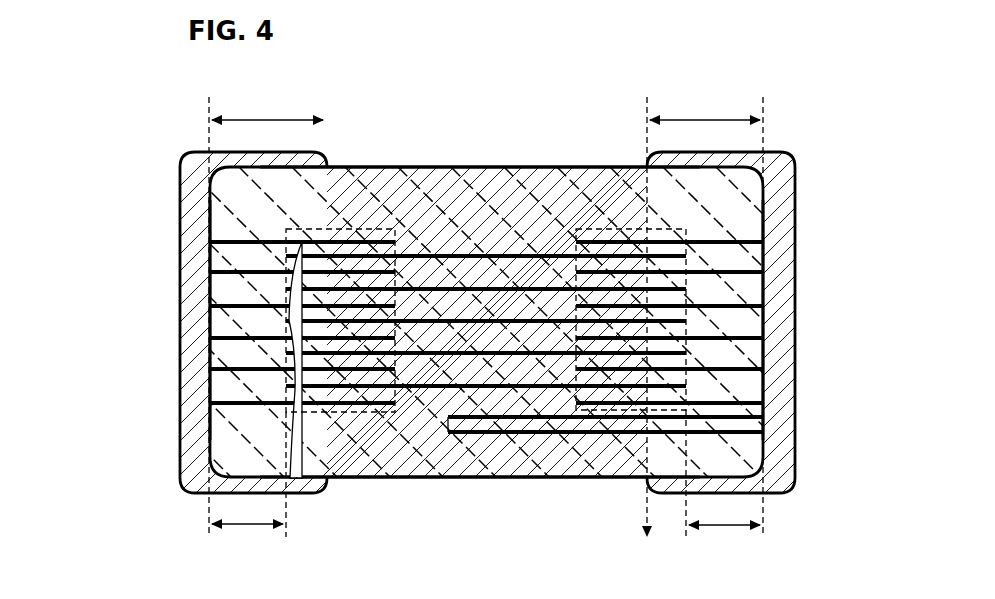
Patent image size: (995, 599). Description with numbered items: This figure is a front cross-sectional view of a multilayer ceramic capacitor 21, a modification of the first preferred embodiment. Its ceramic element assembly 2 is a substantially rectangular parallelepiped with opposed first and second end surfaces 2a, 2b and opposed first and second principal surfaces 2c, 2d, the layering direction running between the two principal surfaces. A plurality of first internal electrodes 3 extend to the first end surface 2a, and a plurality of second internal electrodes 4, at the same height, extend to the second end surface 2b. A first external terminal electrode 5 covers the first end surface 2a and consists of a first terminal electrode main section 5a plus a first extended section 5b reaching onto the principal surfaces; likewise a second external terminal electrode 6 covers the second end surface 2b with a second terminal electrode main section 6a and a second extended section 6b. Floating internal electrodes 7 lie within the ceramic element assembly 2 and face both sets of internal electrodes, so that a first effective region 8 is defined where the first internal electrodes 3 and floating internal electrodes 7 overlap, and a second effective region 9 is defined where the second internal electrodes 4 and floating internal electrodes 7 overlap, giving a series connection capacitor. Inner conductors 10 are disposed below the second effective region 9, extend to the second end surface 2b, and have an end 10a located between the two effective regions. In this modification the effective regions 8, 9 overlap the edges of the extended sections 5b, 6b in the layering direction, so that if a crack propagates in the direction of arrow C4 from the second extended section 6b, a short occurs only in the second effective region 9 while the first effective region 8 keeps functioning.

The multilayer ceramic capacitor 21 is at (170, 110).
The ceramic element assembly 2 is at (425, 164).
The first end surface 2a is at (752, 220).
The second end surface 2b is at (214, 219).
The first principal surface 2c is at (533, 166).
The second principal surface 2d is at (352, 478).
The first internal electrodes 3 is at (745, 268).
The second internal electrodes 4 is at (235, 367).
The first external terminal electrode 5 is at (650, 302).
The first terminal electrode main section 5a is at (795, 187).
The first extended section 5b is at (745, 152).
The second external terminal electrode 6 is at (328, 348).
The second terminal electrode main section 6a is at (181, 462).
The second extended section 6b is at (213, 494).
The floating internal electrodes 7 is at (496, 254).
The first effective region 8 is at (600, 226).
The second effective region 9 is at (355, 226).
The inner conductors 10 is at (735, 412).
The end of the first inner conductor 10a is at (450, 436).
The crack propagation direction arrow C4 is at (326, 97).